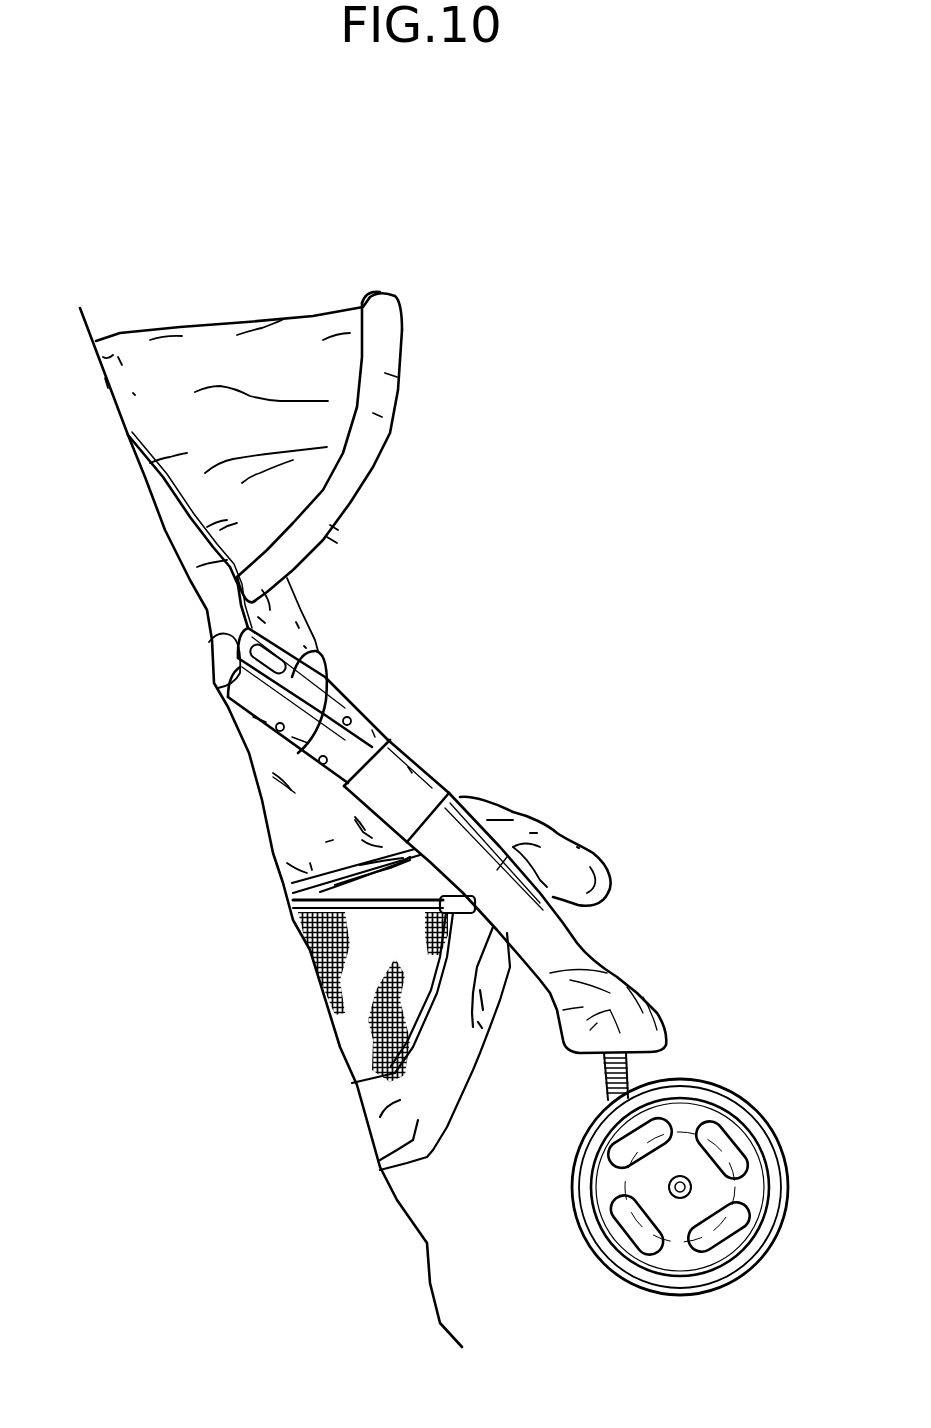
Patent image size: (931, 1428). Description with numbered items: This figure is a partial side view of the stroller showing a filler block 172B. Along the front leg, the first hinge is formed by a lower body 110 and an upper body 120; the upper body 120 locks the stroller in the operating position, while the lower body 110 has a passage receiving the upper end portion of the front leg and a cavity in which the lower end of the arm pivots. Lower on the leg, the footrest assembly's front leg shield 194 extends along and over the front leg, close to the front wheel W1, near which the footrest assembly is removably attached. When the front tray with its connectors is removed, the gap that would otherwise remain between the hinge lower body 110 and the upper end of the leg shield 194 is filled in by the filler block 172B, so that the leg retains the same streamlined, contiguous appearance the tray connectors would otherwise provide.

The lower body 110 is at (372, 731).
The upper body 120 is at (297, 667).
The filler block 172B is at (410, 773).
The front leg shield 194 is at (573, 842).
The front wheel W1 is at (632, 1272).